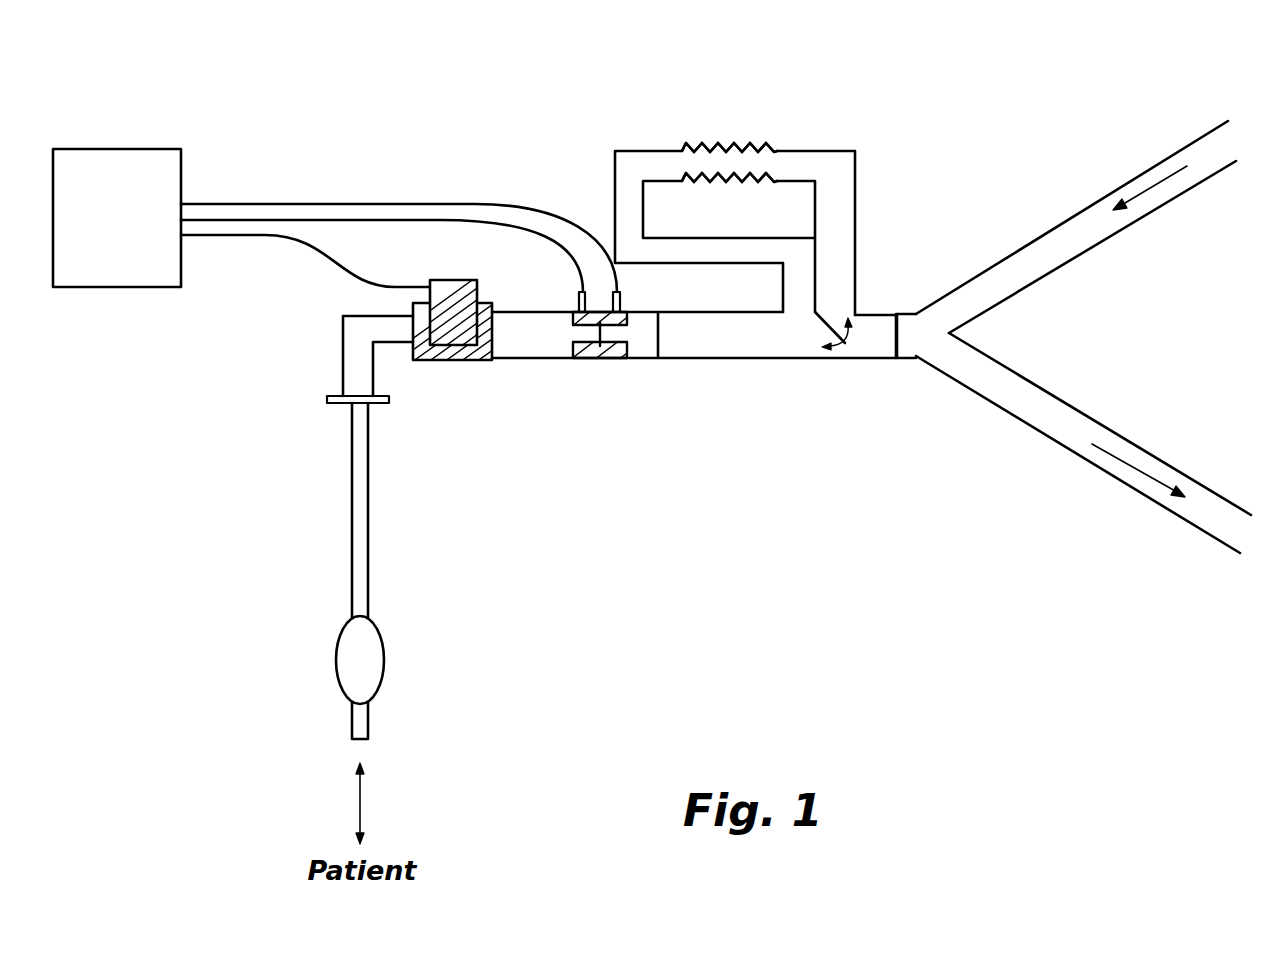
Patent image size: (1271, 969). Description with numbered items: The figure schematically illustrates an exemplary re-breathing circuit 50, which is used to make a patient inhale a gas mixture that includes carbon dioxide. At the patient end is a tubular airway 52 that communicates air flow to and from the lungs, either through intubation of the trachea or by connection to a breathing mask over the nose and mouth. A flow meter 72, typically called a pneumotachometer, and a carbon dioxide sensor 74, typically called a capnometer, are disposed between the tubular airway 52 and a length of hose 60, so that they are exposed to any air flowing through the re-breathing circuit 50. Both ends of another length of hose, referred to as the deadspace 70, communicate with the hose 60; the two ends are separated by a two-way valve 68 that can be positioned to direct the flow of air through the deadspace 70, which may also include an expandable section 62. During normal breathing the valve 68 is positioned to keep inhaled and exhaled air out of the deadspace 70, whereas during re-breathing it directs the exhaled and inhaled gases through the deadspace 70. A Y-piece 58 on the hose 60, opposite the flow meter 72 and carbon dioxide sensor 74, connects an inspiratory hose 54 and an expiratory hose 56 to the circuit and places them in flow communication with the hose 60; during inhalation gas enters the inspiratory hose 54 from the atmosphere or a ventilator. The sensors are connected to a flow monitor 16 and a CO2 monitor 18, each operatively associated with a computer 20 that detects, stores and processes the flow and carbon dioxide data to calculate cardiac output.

The flow monitor 16 is at (131, 172).
The CO2 monitor 18 is at (131, 172).
The computer 20 is at (122, 165).
The re-breathing circuit 50 is at (1033, 286).
The tubular airway 52 is at (352, 533).
The inspiratory hose 54 is at (1113, 236).
The expiratory hose 56 is at (1101, 421).
The Y-piece 58 is at (903, 312).
The hose 60 is at (678, 342).
The expandable section 62 is at (724, 126).
The two-way valve 68 is at (851, 386).
The deadspace 70 is at (845, 183).
The flow meter 72 is at (594, 385).
The carbon dioxide sensor 74 is at (459, 400).